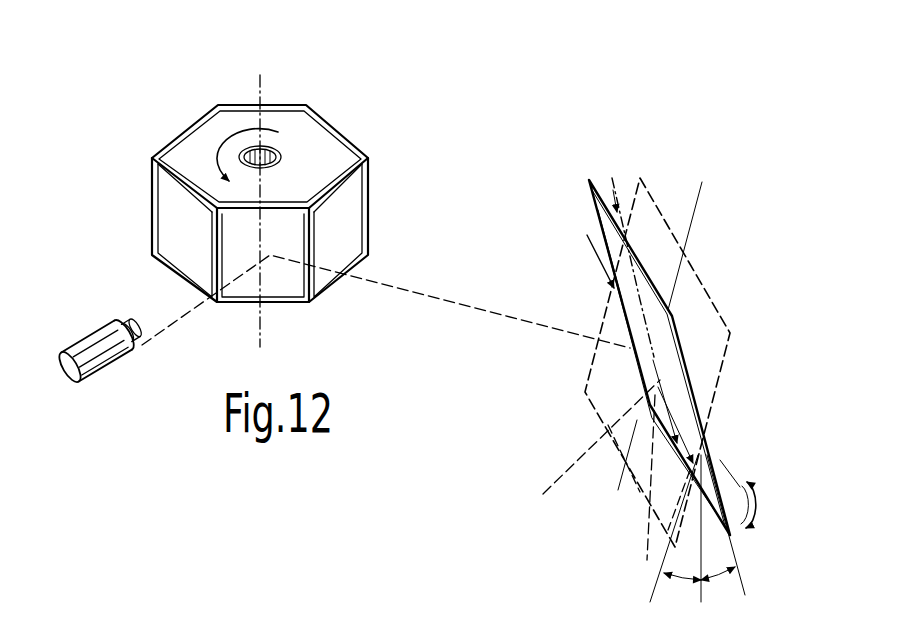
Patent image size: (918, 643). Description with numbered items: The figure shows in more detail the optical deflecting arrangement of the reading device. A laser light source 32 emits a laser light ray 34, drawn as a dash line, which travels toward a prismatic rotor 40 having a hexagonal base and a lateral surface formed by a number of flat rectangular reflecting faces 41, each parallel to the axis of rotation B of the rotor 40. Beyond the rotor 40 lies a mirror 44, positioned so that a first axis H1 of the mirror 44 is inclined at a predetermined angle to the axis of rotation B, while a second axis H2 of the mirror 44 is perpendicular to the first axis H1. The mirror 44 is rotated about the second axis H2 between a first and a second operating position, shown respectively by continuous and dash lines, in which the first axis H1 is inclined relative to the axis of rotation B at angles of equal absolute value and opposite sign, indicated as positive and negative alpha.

The laser light source 32 is at (102, 354).
The laser light ray 34 is at (173, 308).
The prismatic rotor 40 is at (369, 138).
The flat rectangular reflecting faces 41 is at (165, 212).
The mirror 44 is at (678, 164).
The axis of rotation B is at (260, 91).
The first axis H1 is at (733, 198).
The second axis H2 is at (592, 255).